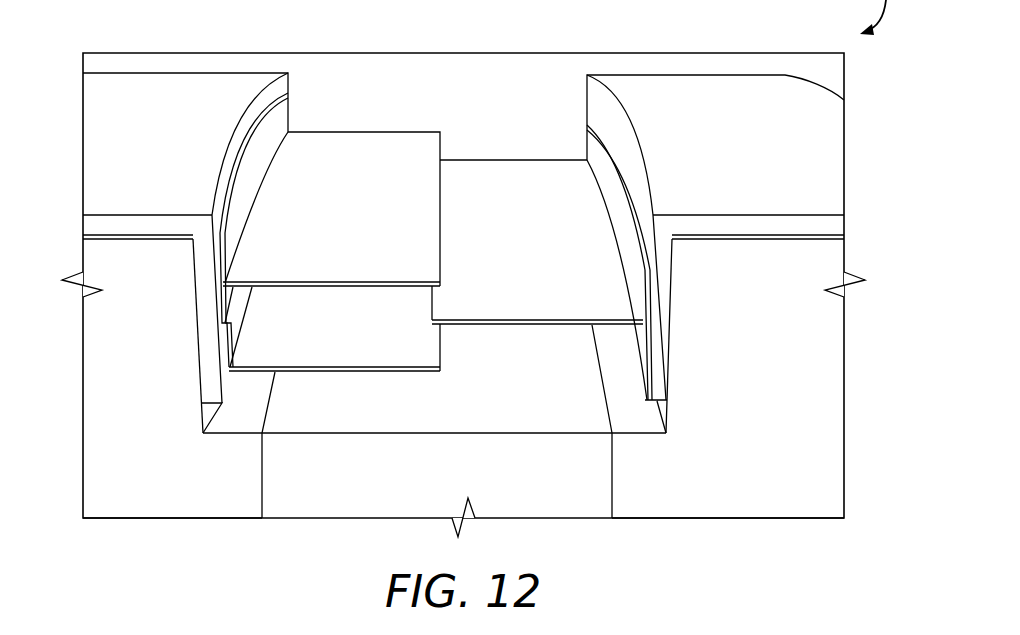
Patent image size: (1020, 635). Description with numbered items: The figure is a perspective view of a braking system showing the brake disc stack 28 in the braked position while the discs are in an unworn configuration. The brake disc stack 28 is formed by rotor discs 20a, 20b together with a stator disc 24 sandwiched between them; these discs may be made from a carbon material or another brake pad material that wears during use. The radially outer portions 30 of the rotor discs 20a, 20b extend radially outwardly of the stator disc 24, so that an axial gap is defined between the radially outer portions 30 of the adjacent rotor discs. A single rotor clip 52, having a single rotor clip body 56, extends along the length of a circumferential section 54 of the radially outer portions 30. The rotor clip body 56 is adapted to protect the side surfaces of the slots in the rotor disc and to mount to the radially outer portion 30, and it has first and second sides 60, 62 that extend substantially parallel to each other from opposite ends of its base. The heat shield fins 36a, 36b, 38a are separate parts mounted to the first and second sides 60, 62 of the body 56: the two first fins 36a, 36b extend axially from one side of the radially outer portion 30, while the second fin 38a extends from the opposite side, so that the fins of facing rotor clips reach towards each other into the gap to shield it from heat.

The brake disc stack 28 is at (85, 536).
The rotor clip 52 is at (182, 141).
The rotor clip body 56 is at (235, 92).
The first side of the body 60 is at (290, 88).
The second side of the body 62 is at (597, 101).
The circumferential section 54 is at (122, 236).
The radially outer portion 30 is at (154, 294).
The first fin 36b is at (378, 210).
The first fin 36a is at (378, 343).
The second fin 38a is at (544, 241).
The stator disc 24 is at (456, 489).
The rotor disc 20a is at (171, 489).
The rotor disc 20b is at (751, 489).